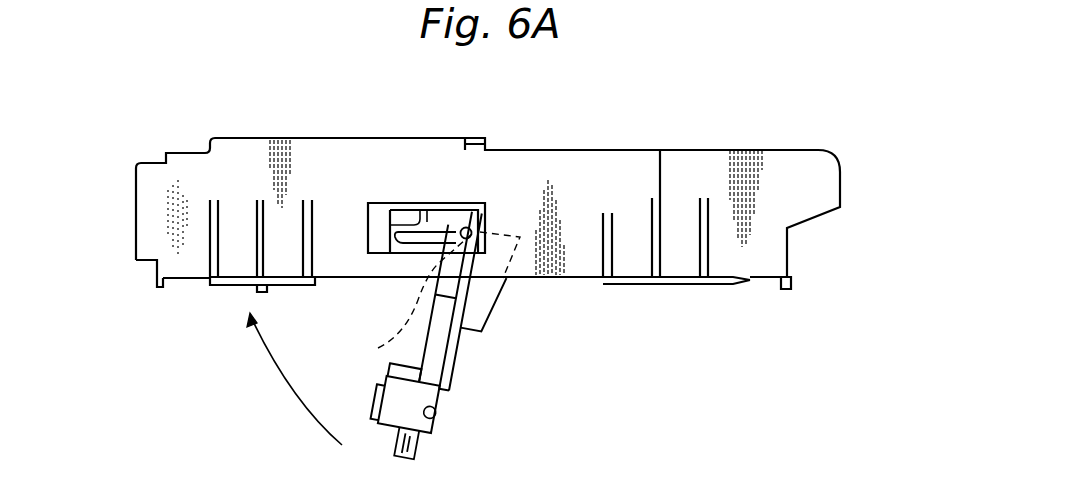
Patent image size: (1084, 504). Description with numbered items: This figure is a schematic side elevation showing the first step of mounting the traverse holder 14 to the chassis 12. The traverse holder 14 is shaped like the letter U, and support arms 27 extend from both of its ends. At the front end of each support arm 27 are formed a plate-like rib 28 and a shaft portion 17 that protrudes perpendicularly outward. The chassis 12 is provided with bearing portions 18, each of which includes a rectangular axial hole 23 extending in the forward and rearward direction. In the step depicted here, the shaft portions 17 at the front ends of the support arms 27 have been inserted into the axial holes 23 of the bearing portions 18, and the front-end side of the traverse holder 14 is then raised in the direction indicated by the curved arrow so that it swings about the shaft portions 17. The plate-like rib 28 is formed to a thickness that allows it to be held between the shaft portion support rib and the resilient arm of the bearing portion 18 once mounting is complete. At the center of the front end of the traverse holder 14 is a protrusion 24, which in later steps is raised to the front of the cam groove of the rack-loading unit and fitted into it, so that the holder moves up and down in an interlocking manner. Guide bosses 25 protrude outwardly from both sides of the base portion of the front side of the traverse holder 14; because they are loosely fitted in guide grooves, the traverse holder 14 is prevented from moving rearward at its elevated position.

The chassis 12 is at (747, 281).
The traverse holder 14 is at (464, 343).
The shaft portions 17 is at (466, 226).
The bearing portions 18 is at (406, 199).
The axial hole 23 is at (413, 245).
The protrusion 24 is at (406, 443).
The guide bosses 25 is at (430, 412).
The support arms 27 is at (468, 302).
The plate-like rib 28 is at (432, 298).